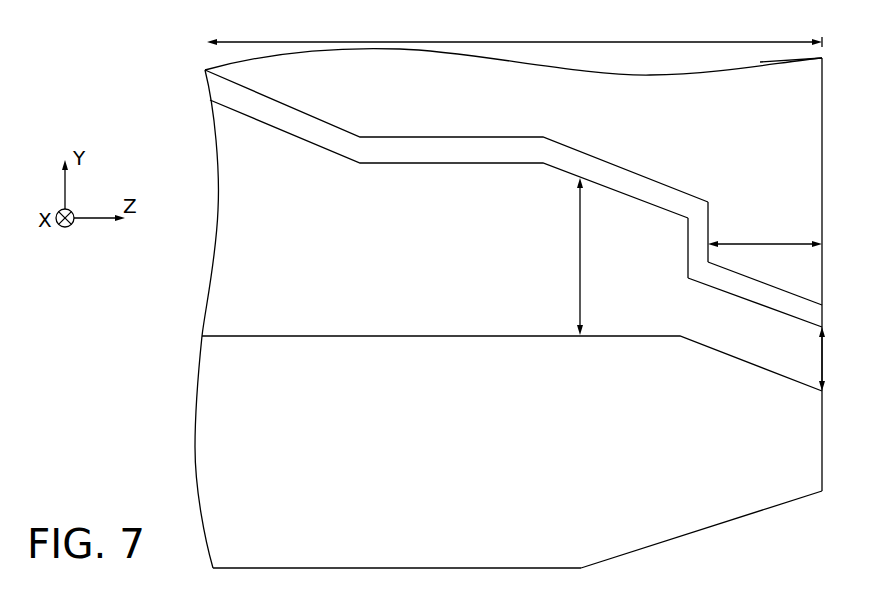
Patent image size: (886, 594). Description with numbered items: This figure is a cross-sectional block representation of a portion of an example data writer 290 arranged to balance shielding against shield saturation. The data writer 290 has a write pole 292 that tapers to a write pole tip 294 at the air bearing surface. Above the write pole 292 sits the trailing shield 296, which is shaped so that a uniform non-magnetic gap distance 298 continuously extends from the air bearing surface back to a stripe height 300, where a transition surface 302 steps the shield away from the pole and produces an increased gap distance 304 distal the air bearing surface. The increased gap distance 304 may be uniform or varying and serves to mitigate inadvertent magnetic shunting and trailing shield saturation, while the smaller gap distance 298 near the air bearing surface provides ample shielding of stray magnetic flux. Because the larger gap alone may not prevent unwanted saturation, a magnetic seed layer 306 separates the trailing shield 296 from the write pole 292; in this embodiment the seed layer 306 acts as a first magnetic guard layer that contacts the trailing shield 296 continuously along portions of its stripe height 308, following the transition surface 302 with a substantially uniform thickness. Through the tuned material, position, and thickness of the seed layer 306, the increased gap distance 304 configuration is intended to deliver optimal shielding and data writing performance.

The data writer 290 is at (107, 48).
The write pole 292 is at (244, 464).
The write pole tip 294 is at (769, 512).
The trailing shield 296 is at (812, 96).
The gap distance 298 is at (839, 359).
The stripe height 300 is at (765, 233).
The transition surface 302 is at (710, 217).
The increased gap distance 304 is at (562, 256).
The seed layer 306 is at (352, 160).
The stripe height 308 is at (514, 32).